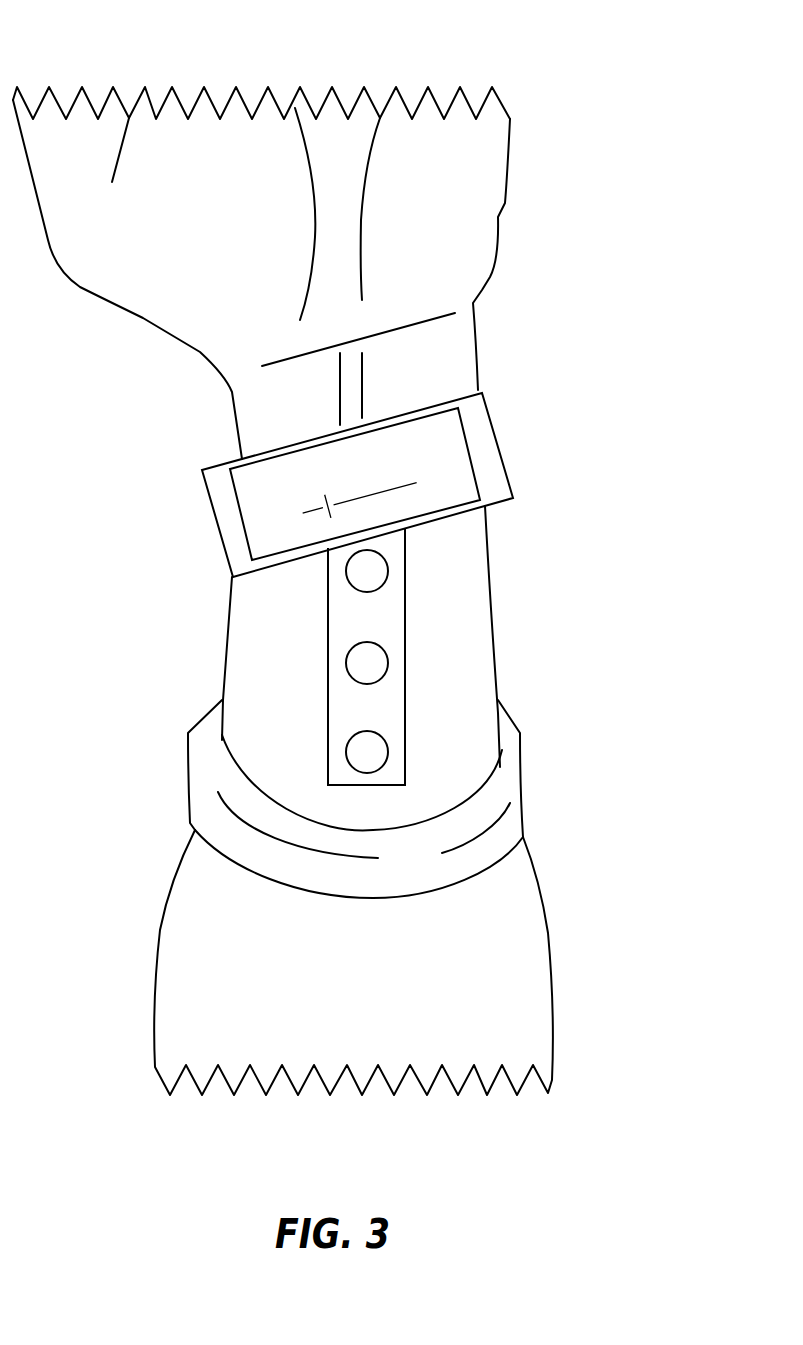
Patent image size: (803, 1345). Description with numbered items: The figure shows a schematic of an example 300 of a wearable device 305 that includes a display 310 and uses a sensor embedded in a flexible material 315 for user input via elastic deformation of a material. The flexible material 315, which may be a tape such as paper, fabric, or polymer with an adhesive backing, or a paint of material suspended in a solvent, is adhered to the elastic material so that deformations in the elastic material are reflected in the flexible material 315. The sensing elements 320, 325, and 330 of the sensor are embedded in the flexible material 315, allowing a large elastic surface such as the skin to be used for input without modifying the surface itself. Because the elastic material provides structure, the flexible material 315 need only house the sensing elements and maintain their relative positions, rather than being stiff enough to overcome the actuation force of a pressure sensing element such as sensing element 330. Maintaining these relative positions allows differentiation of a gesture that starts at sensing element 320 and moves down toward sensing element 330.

The example of a wearable device with sensor embedded in a flexible material 300 is at (668, 30).
The wearable device 305 is at (200, 468).
The display 310 is at (243, 520).
The flexible material 315 is at (328, 587).
The sensing element 320 is at (385, 564).
The sensing element 325 is at (387, 662).
The sensing element 330 is at (385, 752).